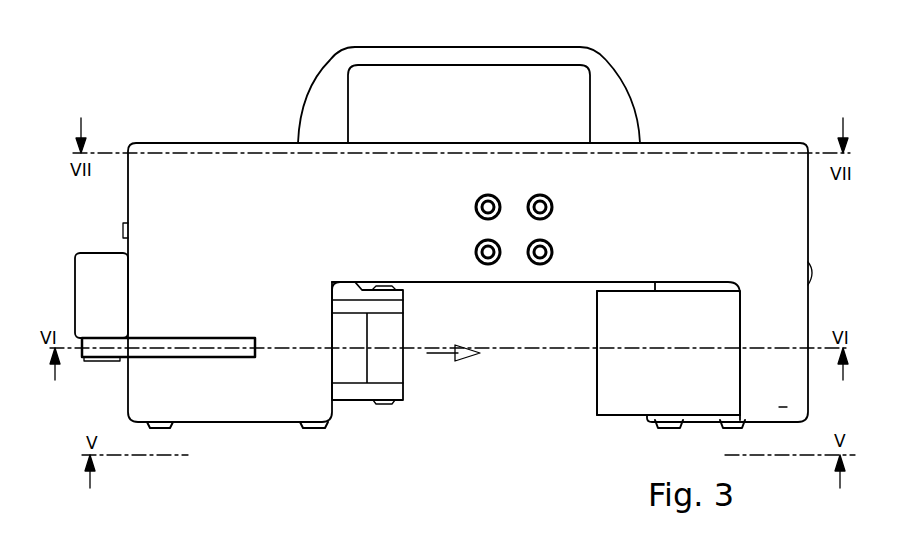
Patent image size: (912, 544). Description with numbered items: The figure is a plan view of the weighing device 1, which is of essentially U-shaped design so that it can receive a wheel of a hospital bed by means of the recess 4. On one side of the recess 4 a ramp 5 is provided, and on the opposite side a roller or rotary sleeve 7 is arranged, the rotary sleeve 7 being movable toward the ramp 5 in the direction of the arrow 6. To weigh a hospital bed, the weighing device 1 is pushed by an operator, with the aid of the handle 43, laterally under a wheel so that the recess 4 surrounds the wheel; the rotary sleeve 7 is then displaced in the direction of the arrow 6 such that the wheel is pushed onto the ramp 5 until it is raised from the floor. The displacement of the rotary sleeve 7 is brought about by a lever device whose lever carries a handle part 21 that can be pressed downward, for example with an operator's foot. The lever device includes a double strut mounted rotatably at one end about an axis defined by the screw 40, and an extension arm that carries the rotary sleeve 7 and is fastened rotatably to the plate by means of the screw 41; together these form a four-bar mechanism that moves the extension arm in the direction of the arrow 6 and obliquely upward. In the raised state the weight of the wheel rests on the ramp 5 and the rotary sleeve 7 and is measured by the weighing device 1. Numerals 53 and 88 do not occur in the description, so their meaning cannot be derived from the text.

The weighing device 1 is at (450, 277).
The recess 4 is at (507, 393).
The ramp 5 is at (623, 392).
The arrow 6 is at (440, 354).
The rotary sleeve 7 is at (387, 376).
The handle part 21 is at (98, 292).
The screw 40 is at (163, 427).
The screw 41 is at (312, 427).
The handle 43 is at (612, 105).
The support arm 53 is at (110, 350).
The housing 88 is at (773, 241).